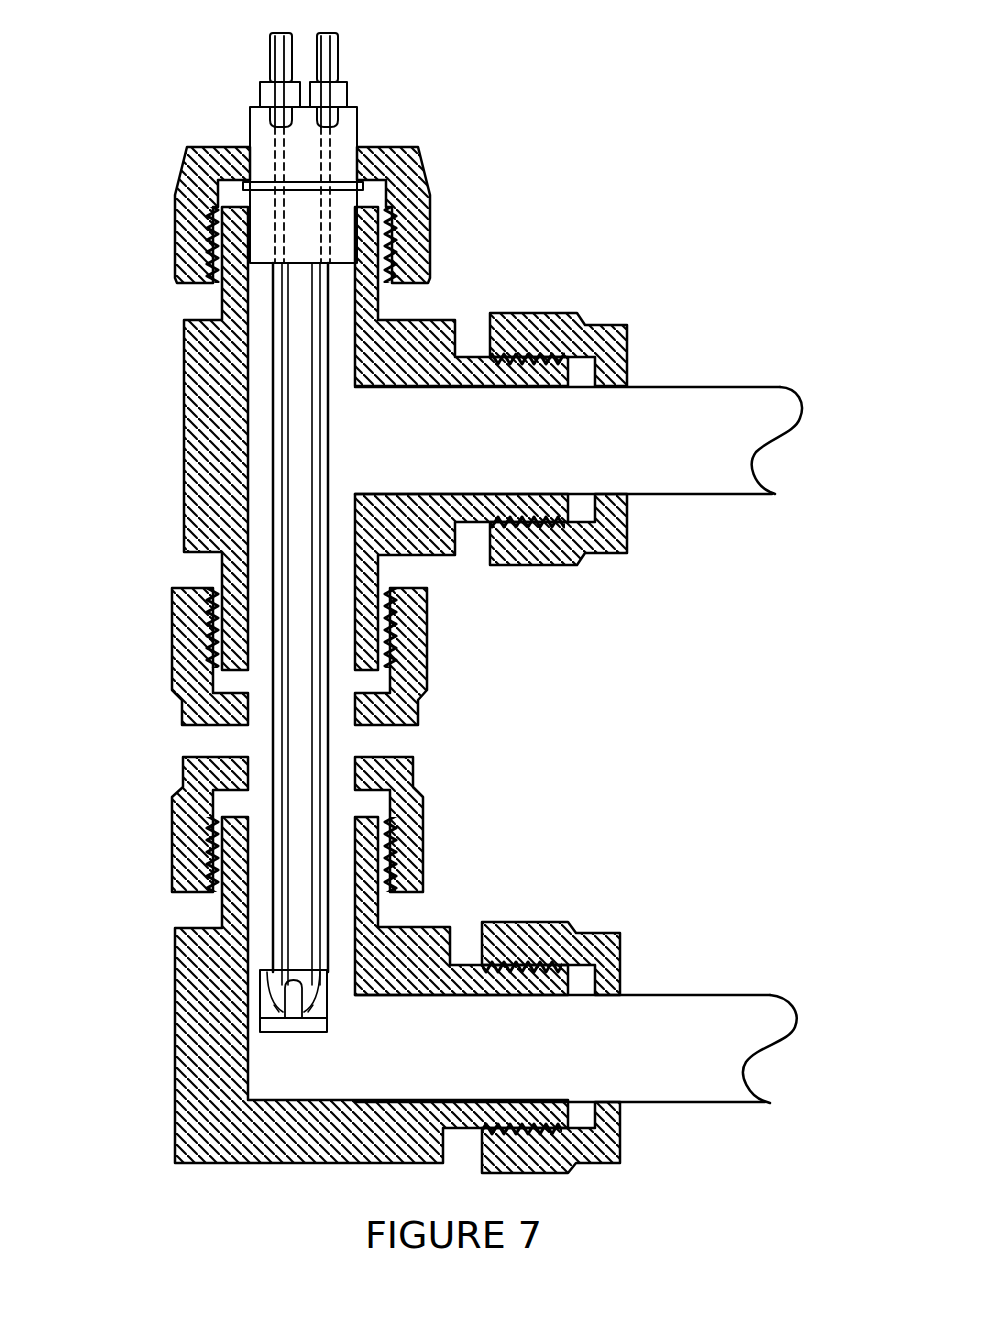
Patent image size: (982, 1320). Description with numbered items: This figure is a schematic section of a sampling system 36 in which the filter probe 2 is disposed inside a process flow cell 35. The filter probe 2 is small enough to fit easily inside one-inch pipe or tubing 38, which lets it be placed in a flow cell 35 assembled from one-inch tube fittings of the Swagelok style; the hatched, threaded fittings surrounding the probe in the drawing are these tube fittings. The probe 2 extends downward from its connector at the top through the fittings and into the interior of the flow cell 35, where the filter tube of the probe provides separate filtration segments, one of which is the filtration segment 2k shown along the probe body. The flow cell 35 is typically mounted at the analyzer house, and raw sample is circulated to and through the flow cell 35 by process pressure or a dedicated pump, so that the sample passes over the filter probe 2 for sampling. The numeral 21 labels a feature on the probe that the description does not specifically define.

The filter probe 2 is at (315, 522).
The sampling system 36 is at (490, 196).
The process flow cell 35 is at (686, 347).
The pipe or tubing 38 is at (184, 398).
The tube 21 is at (268, 717).
The first filtration segment 2k is at (327, 735).